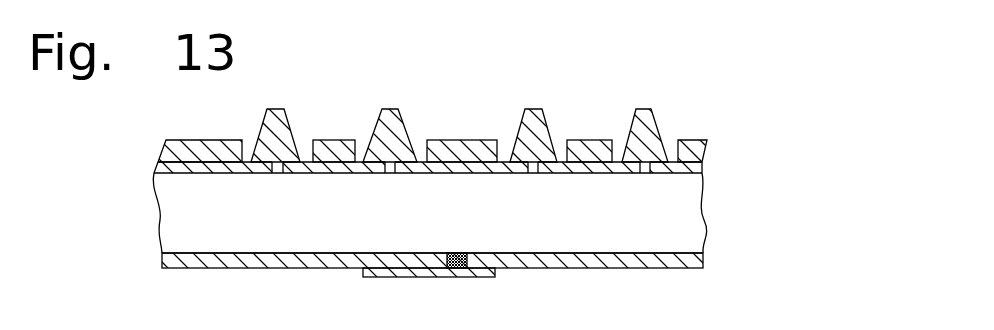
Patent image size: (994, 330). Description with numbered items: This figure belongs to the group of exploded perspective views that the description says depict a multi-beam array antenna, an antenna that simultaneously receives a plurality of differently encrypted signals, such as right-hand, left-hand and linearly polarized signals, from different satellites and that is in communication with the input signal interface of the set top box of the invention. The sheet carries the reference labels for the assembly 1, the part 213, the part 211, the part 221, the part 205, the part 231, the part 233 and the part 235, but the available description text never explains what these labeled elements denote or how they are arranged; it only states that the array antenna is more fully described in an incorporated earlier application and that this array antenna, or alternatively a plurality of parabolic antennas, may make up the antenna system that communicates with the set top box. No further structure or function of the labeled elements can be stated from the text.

The bump connection structure 1 is at (288, 70).
The bump pillar 213 is at (289, 112).
The under-bump metal layer 211 is at (366, 156).
The via opening in metal layer 221 is at (287, 194).
The substrate 205 is at (357, 242).
The back-side via 231 is at (460, 254).
The back-side metal layer 233 is at (688, 263).
The back-side contact pad 235 is at (463, 270).